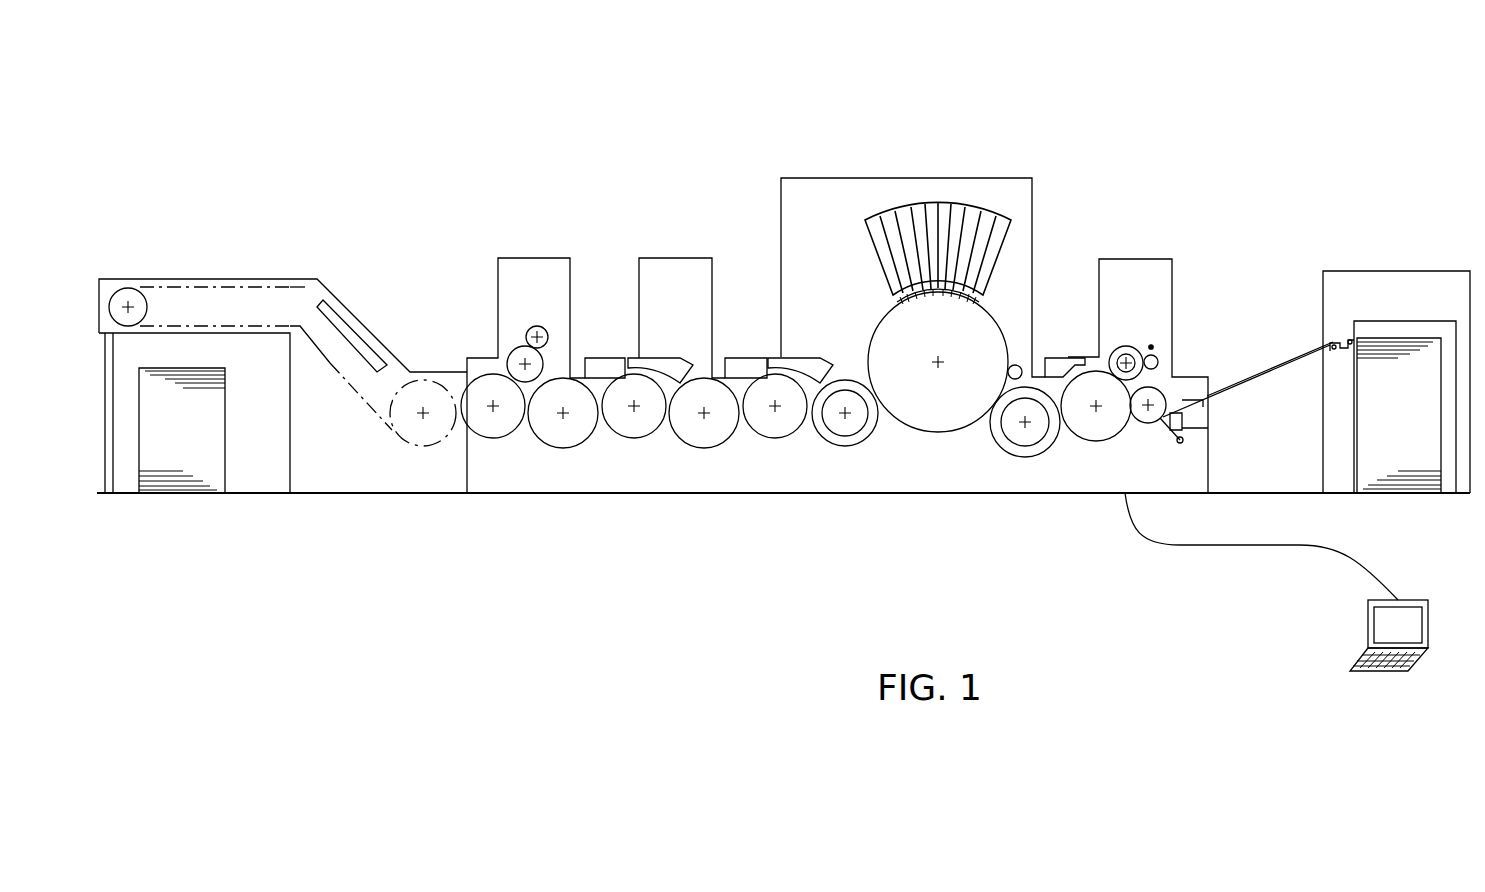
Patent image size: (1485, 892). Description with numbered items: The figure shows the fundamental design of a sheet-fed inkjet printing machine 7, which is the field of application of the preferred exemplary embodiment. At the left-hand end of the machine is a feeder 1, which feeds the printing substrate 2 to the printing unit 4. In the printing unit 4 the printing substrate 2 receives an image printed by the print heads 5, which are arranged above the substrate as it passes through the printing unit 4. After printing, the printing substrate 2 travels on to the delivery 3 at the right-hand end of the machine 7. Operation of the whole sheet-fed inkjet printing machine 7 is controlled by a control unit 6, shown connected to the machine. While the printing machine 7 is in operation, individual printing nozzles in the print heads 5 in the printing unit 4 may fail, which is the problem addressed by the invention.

The feeder 1 is at (218, 307).
The printing substrate 2 is at (993, 313).
The delivery 3 is at (1405, 338).
The printing unit 4 is at (845, 178).
The print heads 5 is at (937, 203).
The control unit 6 is at (1368, 628).
The inkjet printing machine 7 is at (1253, 97).